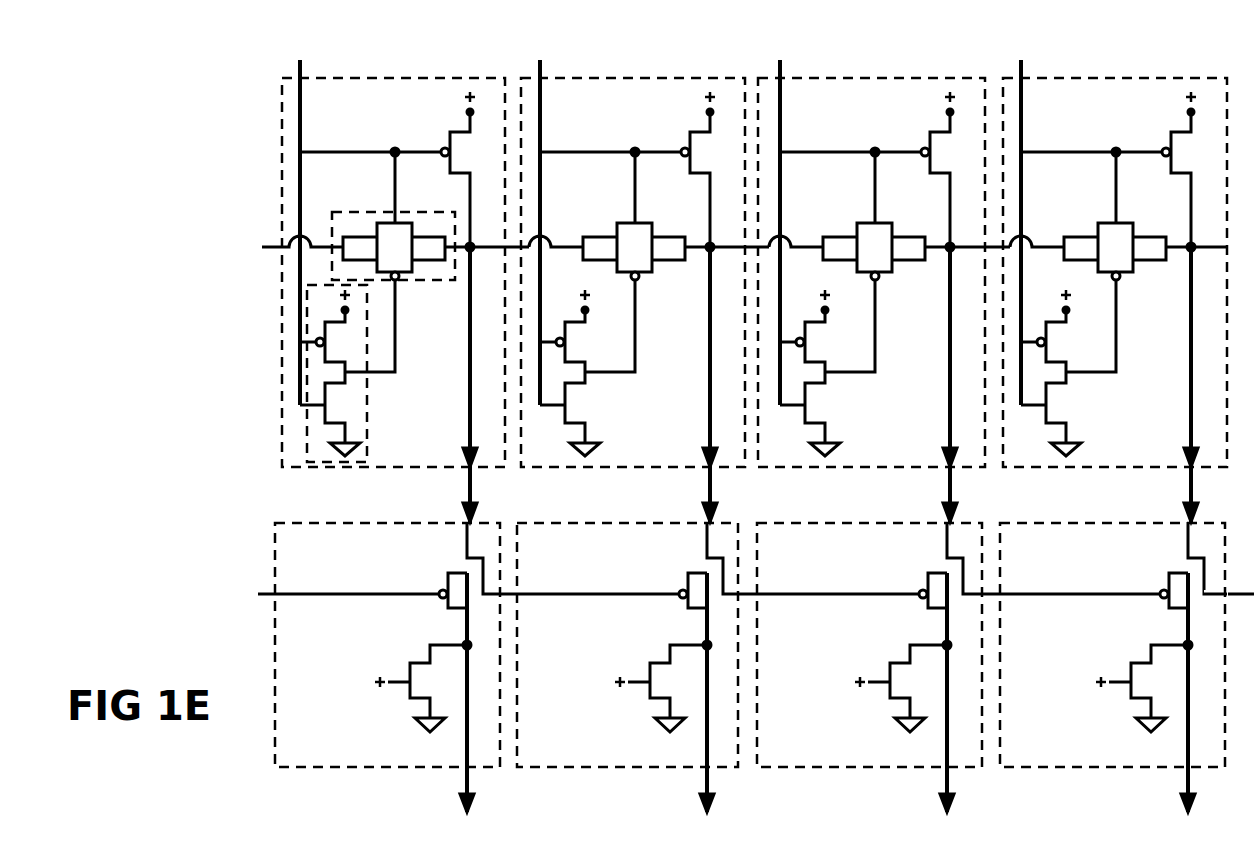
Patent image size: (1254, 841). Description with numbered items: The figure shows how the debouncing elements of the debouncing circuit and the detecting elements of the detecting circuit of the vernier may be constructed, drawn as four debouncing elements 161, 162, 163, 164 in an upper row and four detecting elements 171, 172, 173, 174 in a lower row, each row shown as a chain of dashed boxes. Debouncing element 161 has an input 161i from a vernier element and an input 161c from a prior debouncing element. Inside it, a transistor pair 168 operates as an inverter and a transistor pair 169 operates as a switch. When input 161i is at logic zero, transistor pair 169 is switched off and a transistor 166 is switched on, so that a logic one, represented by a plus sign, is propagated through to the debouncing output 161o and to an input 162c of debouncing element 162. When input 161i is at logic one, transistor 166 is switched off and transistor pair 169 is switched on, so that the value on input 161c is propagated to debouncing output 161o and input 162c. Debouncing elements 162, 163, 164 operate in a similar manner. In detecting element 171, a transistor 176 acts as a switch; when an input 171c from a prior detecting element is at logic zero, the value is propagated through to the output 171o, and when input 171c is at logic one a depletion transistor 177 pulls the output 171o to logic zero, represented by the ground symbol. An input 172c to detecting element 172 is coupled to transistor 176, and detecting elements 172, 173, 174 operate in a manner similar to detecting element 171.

The input from vernier element 161i is at (303, 50).
The input from prior debouncing element 161c is at (270, 245).
The input of debouncing element 162 162c is at (507, 250).
The transistor 166 is at (442, 138).
The transistor pair 169 is at (350, 205).
The transistor pair 168 is at (367, 393).
The debouncing element 161 is at (280, 442).
The debouncing output 161o is at (463, 499).
The debouncing element 162 is at (562, 470).
The debouncing element 163 is at (805, 471).
The debouncing element 164 is at (1047, 469).
The input from prior detecting element 171c is at (264, 590).
The input of detecting element 172 172c is at (500, 598).
The transistor 176 is at (445, 572).
The depletion transistor 177 is at (404, 702).
The detecting element 171 is at (315, 762).
The output of detecting element 171 171o is at (463, 781).
The detecting element 172 is at (560, 768).
The detecting element 173 is at (800, 768).
The detecting element 174 is at (1046, 777).